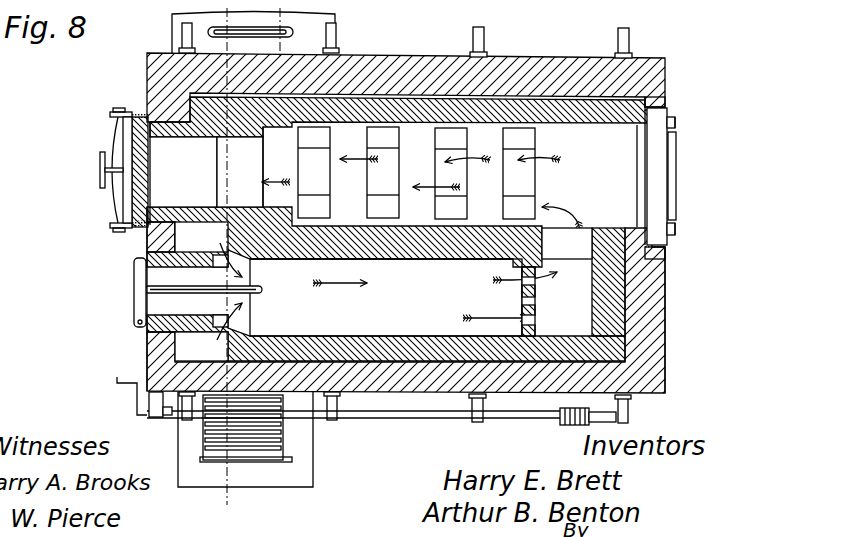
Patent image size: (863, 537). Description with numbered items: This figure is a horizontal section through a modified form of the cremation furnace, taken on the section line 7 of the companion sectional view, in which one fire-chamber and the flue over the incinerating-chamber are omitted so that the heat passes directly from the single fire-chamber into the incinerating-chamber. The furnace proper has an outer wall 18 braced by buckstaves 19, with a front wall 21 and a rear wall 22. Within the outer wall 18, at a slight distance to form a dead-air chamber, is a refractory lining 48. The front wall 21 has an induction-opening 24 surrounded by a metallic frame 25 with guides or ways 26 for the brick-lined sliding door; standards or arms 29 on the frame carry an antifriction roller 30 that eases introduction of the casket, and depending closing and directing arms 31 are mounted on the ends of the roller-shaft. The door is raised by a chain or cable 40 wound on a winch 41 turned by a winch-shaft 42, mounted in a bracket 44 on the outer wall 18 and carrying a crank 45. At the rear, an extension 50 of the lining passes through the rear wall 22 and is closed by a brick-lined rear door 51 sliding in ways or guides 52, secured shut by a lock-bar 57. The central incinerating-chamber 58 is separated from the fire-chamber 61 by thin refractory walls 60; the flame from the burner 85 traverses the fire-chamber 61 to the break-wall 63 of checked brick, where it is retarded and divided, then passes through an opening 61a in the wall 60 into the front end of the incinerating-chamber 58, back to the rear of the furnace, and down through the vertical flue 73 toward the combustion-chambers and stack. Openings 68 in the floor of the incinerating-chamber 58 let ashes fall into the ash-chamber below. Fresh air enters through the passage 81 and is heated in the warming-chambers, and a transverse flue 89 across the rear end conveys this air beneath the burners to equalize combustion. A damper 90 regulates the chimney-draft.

The section line 7 is at (227, 505).
The outer wall 18 is at (420, 225).
The buckstaves 19 is at (189, 22).
The front wall 21 is at (667, 305).
The rear wall 22 is at (147, 243).
The induction-opening 24 is at (666, 107).
The metallic frame 25 is at (640, 144).
The guides or ways 26 is at (664, 110).
The standards or arms 29 is at (676, 124).
The antifriction roller 30 is at (677, 185).
The closing and directing arms 31 is at (677, 119).
The chain or cable 40 is at (573, 406).
The winch 41 is at (602, 412).
The winch-shaft 42 is at (523, 412).
The bracket 44 is at (160, 415).
The crank 45 is at (123, 396).
The lining 48 is at (589, 120).
The extension 50 is at (183, 172).
The rear door 51 is at (143, 185).
The ways or guides 52 is at (112, 122).
The lock-bar 57 is at (118, 198).
The incinerating-chamber 58 is at (425, 194).
The walls 60 is at (443, 252).
The fire-chamber 61 is at (403, 297).
The opening 61a is at (567, 243).
The break-wall 63 is at (522, 297).
The openings 68 is at (416, 173).
The vertical flue 73 is at (240, 167).
The passage 81 is at (263, 460).
The burner 85 is at (263, 290).
The transverse flue 89 is at (208, 291).
The damper 90 is at (293, 33).